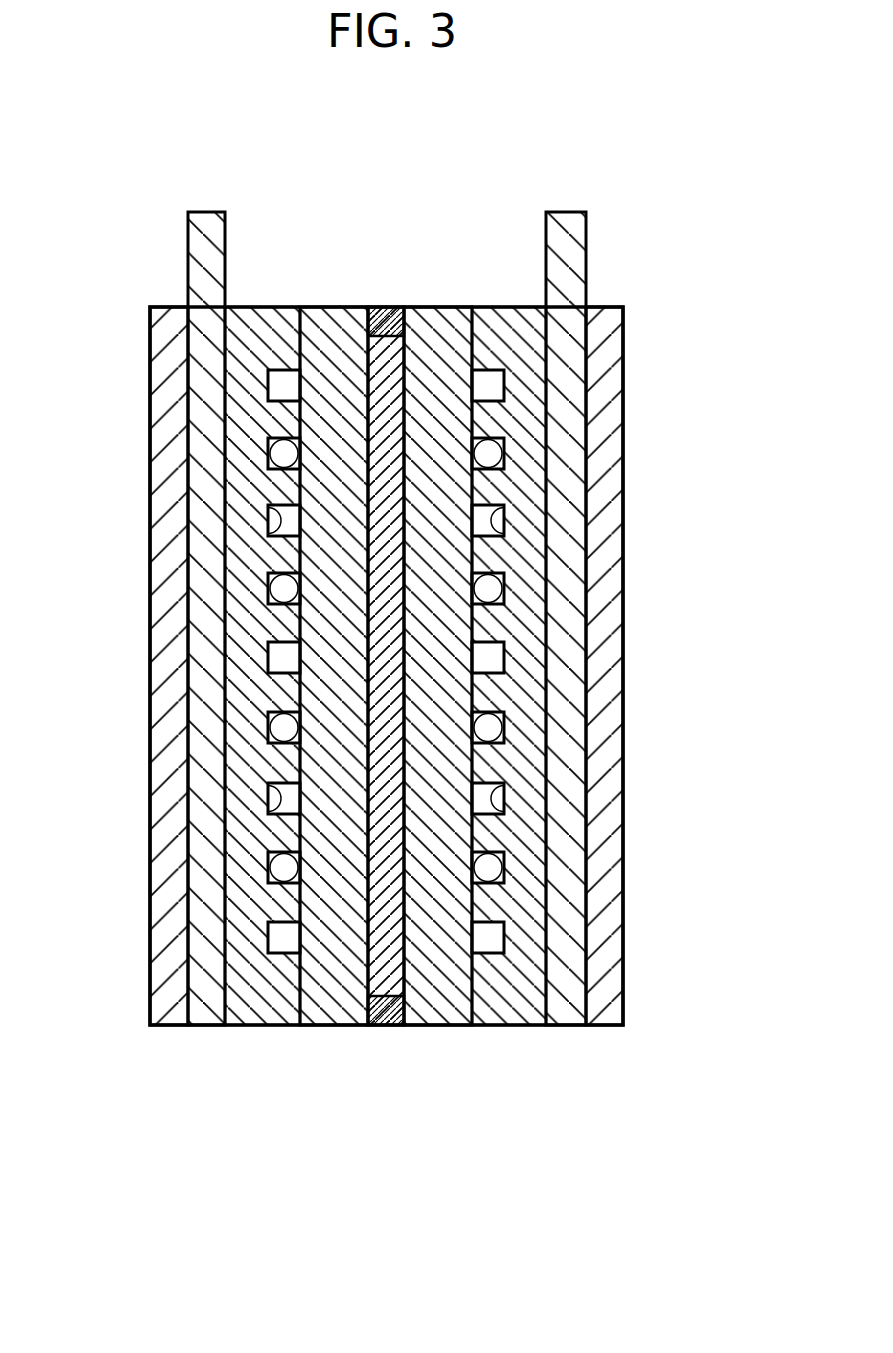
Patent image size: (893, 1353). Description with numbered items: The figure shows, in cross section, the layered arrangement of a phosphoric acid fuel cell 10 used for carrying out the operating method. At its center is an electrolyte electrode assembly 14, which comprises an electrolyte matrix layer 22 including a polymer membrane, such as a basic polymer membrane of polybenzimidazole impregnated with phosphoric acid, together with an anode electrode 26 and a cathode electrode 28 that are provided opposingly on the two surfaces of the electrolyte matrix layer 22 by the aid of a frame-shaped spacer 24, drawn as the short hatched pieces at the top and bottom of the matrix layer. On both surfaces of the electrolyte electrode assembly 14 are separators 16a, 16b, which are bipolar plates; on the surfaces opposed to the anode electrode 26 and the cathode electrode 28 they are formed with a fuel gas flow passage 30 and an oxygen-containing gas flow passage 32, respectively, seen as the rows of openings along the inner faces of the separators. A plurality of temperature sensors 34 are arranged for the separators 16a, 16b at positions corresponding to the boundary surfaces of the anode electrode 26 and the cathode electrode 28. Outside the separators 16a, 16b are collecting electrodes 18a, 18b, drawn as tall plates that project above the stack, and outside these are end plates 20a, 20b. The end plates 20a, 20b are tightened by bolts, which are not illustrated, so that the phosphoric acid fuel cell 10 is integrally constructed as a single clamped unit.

The phosphoric acid fuel cell 10 is at (600, 133).
The electrolyte electrode assembly 14 is at (383, 716).
The separator 16a is at (273, 327).
The separator 16b is at (503, 325).
The collecting electrode 18a is at (210, 227).
The collecting electrode 18b is at (565, 233).
The end plate 20a is at (157, 378).
The end plate 20b is at (608, 385).
The electrolyte matrix layer 22 is at (388, 1017).
The frame-shaped spacer 24 is at (388, 315).
The anode electrode 26 is at (333, 1013).
The cathode electrode 28 is at (440, 1007).
The fuel gas flow passage 30 is at (270, 533).
The oxygen-containing gas flow passage 32 is at (508, 532).
The temperature sensor 34 is at (485, 588).